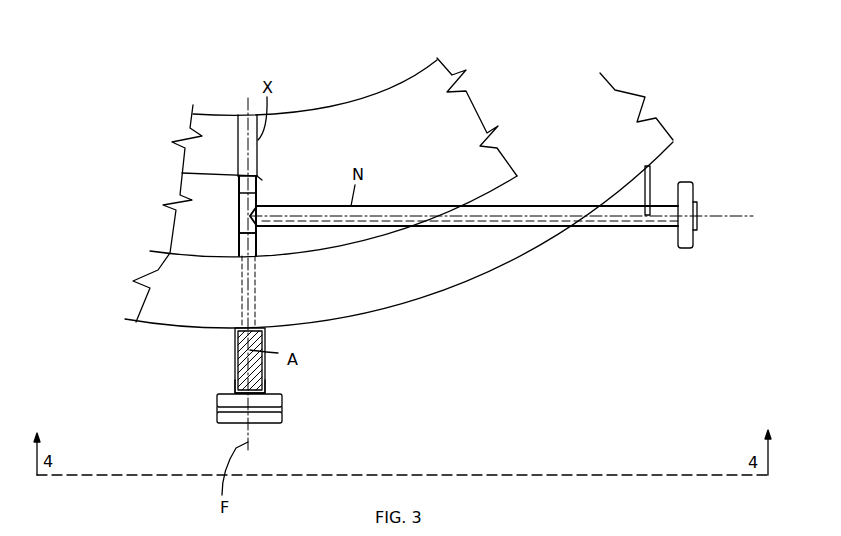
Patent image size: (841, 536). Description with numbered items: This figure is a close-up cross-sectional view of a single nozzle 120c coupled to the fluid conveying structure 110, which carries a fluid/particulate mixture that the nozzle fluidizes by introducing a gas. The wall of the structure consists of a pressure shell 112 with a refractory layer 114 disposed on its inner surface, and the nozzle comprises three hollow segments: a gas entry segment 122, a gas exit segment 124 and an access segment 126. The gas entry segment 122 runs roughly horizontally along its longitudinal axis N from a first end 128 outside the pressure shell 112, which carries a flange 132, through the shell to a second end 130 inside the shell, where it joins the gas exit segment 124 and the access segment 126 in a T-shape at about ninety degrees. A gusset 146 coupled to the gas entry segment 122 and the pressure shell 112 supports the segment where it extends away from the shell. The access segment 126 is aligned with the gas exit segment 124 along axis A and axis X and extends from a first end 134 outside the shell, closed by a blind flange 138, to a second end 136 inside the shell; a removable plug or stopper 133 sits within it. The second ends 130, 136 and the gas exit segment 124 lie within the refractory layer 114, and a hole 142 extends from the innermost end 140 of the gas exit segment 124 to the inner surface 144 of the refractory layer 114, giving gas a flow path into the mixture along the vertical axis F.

The fluid conveying structure 110 is at (472, 302).
The pressure shell 112 is at (392, 282).
The refractory layer 114 is at (445, 170).
The nozzle 120c is at (273, 432).
The gas entry segment 122 is at (598, 228).
The gas exit segment 124 is at (240, 192).
The access segment 126 is at (236, 347).
The first end of gas entry segment 128 is at (659, 238).
The second end of gas entry segment 130 is at (290, 190).
The flange 132 is at (690, 190).
The removable plug or stopper 133 is at (264, 382).
The first end of access segment 134 is at (224, 386).
The second end of access segment 136 is at (228, 242).
The flange 138 is at (227, 424).
The innermost end of gas exit segment 140 is at (258, 176).
The hole 142 is at (237, 131).
The inner surface of refractory layer 144 is at (395, 87).
The gusset 146 is at (650, 175).